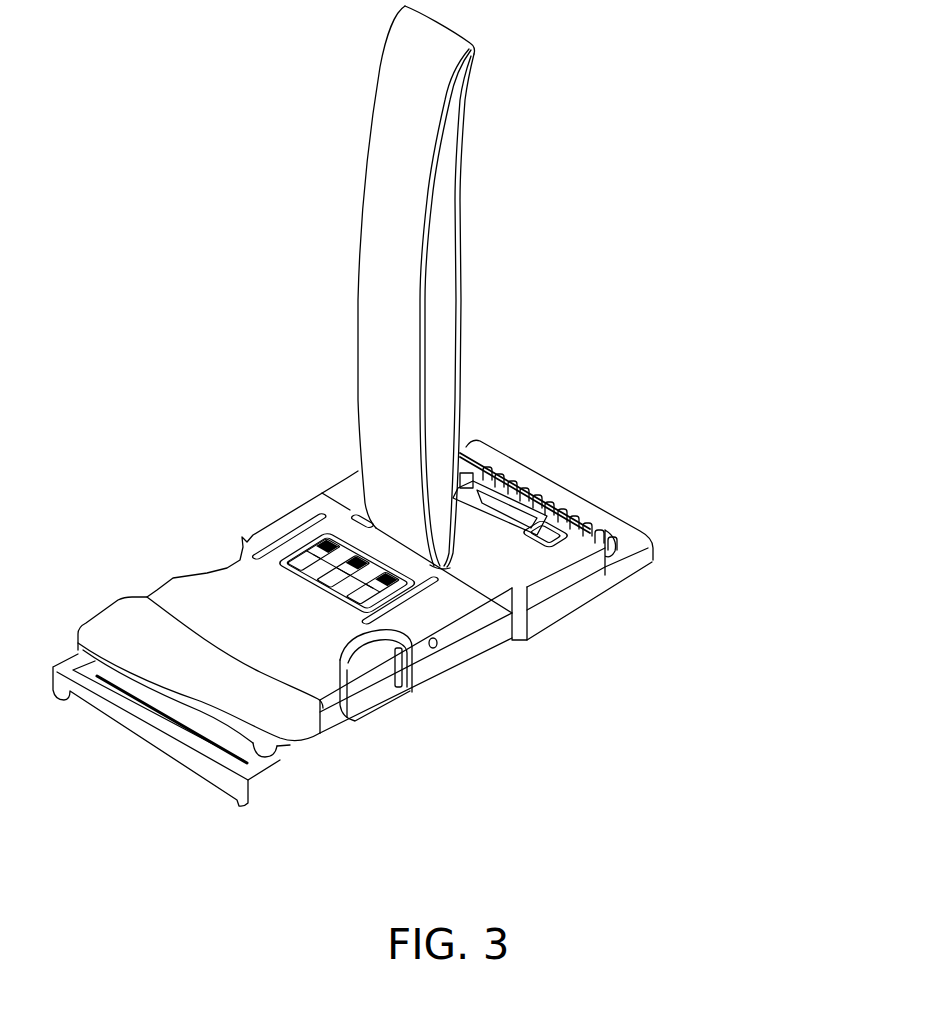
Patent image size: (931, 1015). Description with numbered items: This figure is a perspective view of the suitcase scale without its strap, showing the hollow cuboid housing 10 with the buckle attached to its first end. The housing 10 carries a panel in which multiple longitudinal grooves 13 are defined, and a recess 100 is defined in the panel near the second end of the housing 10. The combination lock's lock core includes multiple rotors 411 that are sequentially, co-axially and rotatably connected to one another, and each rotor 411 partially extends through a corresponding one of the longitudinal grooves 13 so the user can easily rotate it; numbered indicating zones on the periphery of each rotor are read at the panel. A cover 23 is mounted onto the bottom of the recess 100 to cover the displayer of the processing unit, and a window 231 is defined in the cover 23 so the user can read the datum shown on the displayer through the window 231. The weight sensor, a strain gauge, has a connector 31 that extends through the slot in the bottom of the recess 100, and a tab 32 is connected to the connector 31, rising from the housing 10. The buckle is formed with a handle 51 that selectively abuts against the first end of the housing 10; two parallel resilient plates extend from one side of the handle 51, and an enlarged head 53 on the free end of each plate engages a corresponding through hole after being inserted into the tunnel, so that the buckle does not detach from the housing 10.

The housing 10 is at (154, 566).
The longitudinal grooves 13 is at (293, 572).
The cover 23 is at (600, 524).
The connector 31 is at (448, 570).
The tab 32 is at (398, 147).
The handle 51 is at (108, 630).
The enlarged head 53 is at (380, 692).
The recess 100 is at (353, 513).
The window 231 is at (470, 480).
The rotors 411 is at (310, 553).